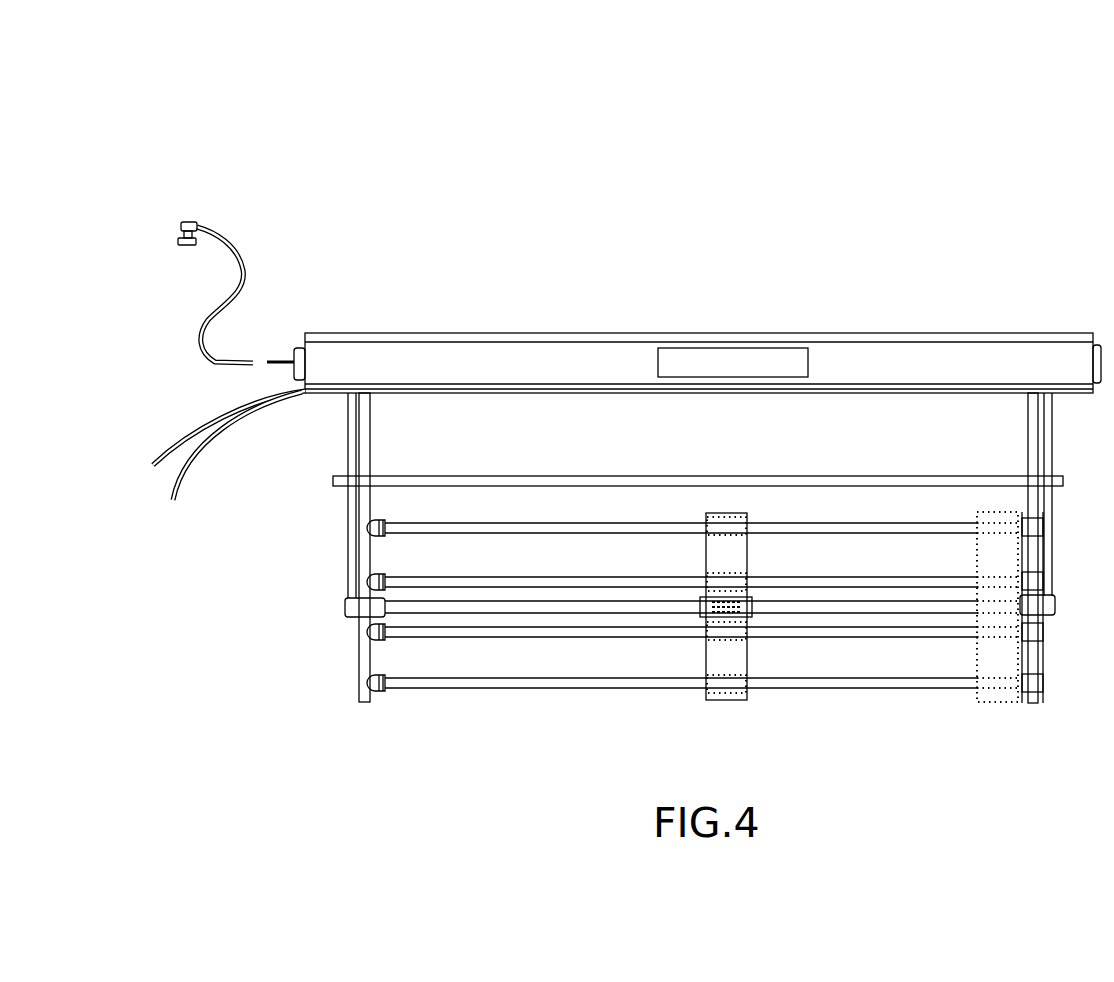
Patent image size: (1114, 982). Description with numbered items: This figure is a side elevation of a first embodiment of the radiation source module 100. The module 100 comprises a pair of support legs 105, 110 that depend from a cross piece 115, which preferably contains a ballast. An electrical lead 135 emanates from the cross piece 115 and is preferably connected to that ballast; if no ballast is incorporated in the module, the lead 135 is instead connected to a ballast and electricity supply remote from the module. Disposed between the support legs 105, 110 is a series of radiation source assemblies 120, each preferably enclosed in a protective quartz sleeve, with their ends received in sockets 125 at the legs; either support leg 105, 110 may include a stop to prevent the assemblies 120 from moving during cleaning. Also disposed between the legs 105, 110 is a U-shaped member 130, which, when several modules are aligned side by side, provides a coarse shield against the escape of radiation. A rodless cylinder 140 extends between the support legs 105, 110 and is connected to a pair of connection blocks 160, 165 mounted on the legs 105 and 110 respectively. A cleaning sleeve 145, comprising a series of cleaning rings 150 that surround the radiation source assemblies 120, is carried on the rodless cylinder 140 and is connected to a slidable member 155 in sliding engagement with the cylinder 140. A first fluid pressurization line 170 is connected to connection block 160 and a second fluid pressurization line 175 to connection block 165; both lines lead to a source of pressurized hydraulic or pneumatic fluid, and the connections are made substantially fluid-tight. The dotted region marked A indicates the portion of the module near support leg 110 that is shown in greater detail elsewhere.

The radiation source module 100 is at (872, 270).
The support leg 105 is at (348, 418).
The support leg 110 is at (1036, 418).
The cross piece 115 is at (581, 365).
The radiation source assembly 120 is at (893, 530).
The lamp sockets 125 is at (377, 537).
The U-shaped member 130 is at (478, 477).
The electrical lead 135 is at (238, 242).
The rodless cylinder 140 is at (472, 606).
The cleaning sleeve 145 is at (743, 655).
The cleaning ring 150 is at (718, 572).
The slidable member 155 is at (752, 598).
The connection block 160 is at (344, 608).
The connection block 165 is at (1045, 617).
The first fluid pressurization line 170 is at (168, 452).
The second fluid pressurization line 175 is at (170, 490).
The detail region A is at (995, 705).